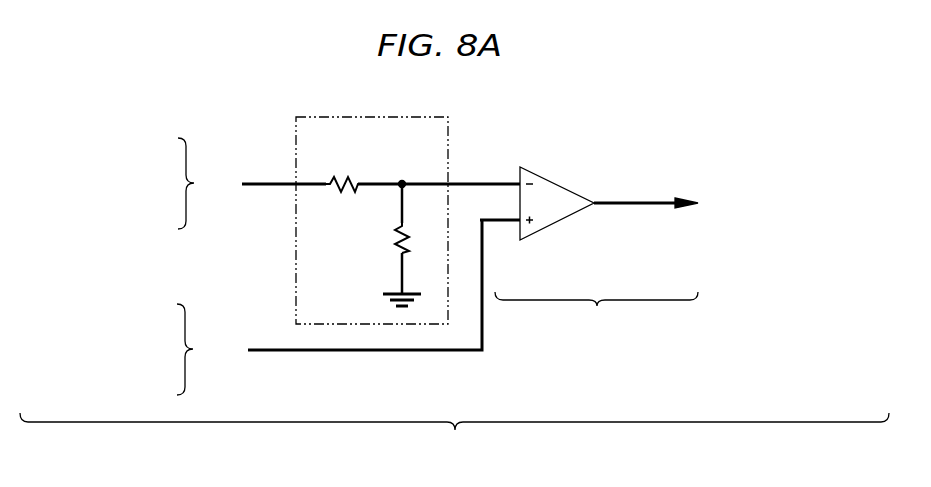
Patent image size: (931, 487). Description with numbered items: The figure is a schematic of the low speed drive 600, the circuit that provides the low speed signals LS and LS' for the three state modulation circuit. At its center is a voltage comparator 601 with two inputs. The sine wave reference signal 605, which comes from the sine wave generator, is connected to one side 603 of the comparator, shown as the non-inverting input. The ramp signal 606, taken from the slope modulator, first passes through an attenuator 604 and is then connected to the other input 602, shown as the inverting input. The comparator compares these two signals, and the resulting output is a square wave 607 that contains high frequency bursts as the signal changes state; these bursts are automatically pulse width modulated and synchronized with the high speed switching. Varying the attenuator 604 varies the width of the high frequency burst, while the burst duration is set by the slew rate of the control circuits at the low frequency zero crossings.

The low speed drive 600 is at (454, 440).
The voltage comparator 601 is at (596, 255).
The other input 602 is at (500, 182).
The one side 603 is at (503, 224).
The attenuator 604 is at (341, 117).
The sine wave reference signal 605 is at (261, 307).
The ramp signal 606 is at (189, 183).
The square wave 607 is at (810, 255).